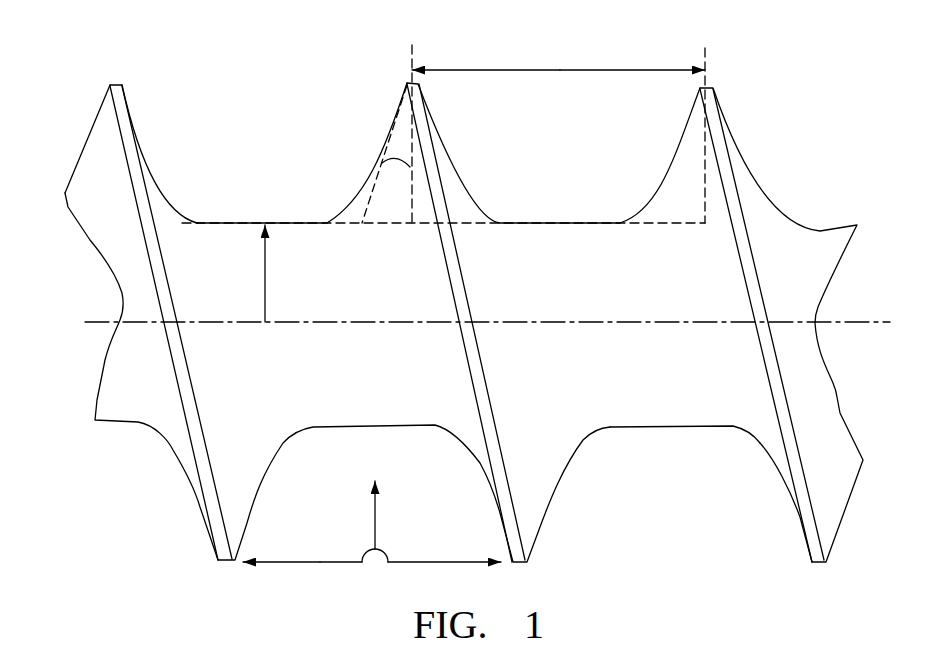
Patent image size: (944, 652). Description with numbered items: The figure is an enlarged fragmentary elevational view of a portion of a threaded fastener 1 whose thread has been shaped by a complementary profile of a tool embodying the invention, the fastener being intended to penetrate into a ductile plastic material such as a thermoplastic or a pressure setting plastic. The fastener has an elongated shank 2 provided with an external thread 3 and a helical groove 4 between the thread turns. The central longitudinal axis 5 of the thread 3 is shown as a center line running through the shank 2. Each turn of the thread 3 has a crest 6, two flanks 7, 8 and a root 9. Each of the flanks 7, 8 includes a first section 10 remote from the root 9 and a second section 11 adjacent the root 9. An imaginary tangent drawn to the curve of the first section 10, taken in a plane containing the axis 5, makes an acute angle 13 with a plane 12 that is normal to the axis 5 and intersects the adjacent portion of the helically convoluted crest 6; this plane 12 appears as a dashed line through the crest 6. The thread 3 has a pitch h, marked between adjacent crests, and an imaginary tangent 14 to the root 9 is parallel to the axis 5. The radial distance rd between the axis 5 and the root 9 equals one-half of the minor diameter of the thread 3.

The threaded fastener 1 is at (140, 451).
The elongated shank 2 is at (232, 280).
The external thread 3 is at (372, 527).
The helical groove 4 is at (652, 480).
The central longitudinal axis 5 is at (557, 320).
The crest 6 is at (118, 82).
The flank 7 is at (143, 133).
The flank 8 is at (668, 168).
The root 9 is at (264, 222).
The first section 10 is at (405, 87).
The second section 11 is at (263, 223).
The plane 12 is at (403, 223).
The acute angle 13 is at (395, 177).
The imaginary tangent 14 is at (350, 226).
The pitch h is at (562, 74).
The radial distance rd is at (278, 273).